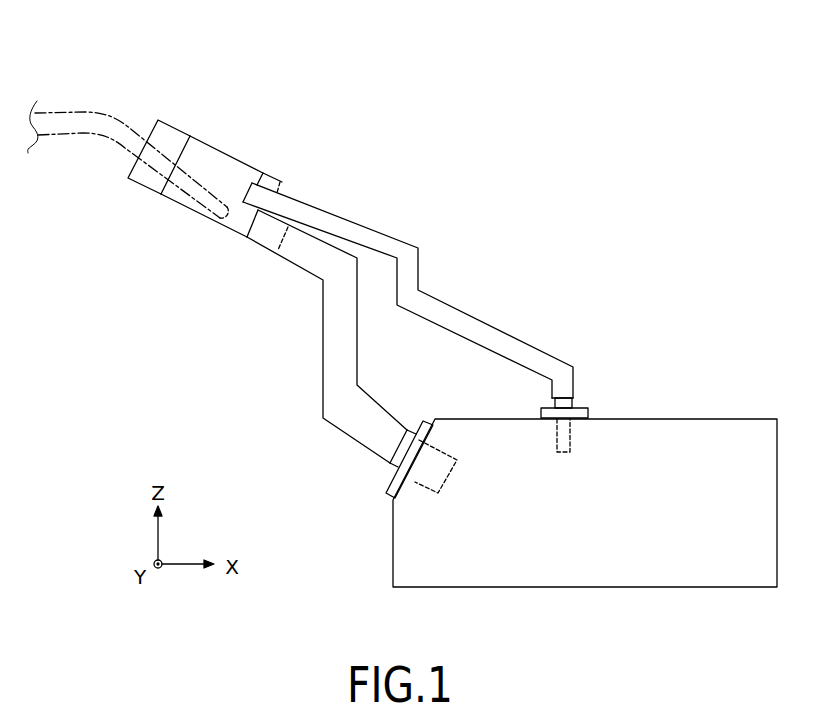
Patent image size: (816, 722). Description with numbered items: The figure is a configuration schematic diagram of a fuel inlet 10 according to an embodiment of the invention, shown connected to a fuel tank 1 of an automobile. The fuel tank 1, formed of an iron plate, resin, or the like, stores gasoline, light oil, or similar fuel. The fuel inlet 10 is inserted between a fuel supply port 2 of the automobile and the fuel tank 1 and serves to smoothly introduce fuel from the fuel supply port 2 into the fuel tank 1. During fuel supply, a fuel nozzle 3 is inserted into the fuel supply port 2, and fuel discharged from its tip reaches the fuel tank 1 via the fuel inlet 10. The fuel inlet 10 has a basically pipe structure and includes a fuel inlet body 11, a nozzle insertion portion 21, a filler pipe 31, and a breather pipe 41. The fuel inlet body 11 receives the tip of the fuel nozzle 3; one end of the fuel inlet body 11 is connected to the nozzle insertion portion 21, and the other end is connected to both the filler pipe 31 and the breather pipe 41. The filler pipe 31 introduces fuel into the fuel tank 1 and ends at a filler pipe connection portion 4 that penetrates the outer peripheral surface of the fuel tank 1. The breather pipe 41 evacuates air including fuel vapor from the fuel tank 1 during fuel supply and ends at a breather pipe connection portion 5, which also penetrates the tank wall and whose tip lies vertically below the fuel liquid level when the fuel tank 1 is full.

The fuel tank 1 is at (657, 438).
The fuel supply port 2 is at (206, 133).
The fuel nozzle 3 is at (92, 131).
The filler pipe connection portion 4 is at (427, 480).
The breather pipe connection portion 5 is at (570, 433).
The fuel inlet 10 is at (408, 291).
The fuel inlet body 11 is at (230, 175).
The nozzle insertion portion 21 is at (177, 140).
The filler pipe 31 is at (300, 257).
The breather pipe 41 is at (358, 229).